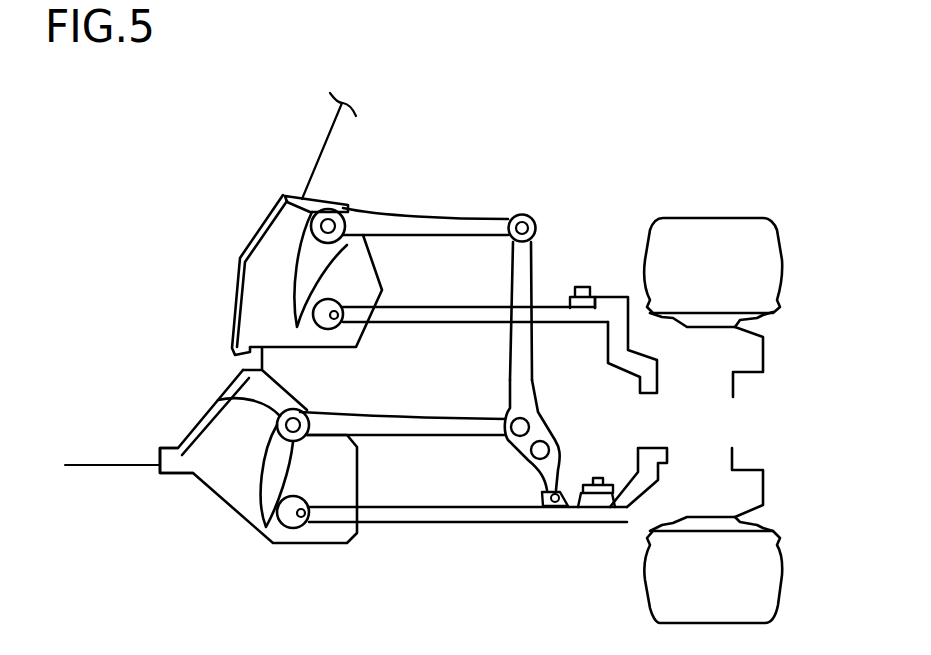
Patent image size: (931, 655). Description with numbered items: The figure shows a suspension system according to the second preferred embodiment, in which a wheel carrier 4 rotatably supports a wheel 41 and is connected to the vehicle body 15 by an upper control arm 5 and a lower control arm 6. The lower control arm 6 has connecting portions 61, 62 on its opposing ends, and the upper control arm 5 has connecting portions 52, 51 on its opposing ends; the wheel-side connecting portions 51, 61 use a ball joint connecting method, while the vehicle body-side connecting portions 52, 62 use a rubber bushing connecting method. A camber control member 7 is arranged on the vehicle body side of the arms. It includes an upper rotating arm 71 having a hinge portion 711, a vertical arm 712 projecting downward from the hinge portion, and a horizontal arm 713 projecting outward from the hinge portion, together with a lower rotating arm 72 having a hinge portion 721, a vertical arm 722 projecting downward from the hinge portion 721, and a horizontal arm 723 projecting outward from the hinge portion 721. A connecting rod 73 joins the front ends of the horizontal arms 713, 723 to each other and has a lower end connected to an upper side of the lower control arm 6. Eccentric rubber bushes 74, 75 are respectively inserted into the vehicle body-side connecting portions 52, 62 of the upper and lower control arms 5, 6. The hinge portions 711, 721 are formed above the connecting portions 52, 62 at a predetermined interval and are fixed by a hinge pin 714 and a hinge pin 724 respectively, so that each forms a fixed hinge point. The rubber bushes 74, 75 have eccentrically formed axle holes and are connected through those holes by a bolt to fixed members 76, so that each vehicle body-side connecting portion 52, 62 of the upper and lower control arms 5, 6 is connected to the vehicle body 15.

The wheel carrier 4 is at (614, 296).
The upper control arm 5 is at (458, 298).
The lower control arm 6 is at (443, 533).
The camber control member 7 is at (575, 432).
The vehicle body 15 is at (323, 148).
The wheel 41 is at (768, 263).
The connecting portion 51 is at (548, 306).
The connecting portion 52 is at (345, 326).
The connecting portion 61 is at (595, 509).
The connecting portion 62 is at (299, 522).
The upper rotating arm 71 is at (425, 208).
The lower rotating arm 72 is at (400, 446).
The connecting rod 73 is at (525, 370).
The eccentric rubber bush 74 is at (341, 304).
The eccentric rubber bush 75 is at (290, 518).
The fixed member 76 is at (203, 457).
The hinge portion 711 is at (290, 199).
The vertical arm 712 is at (298, 284).
The horizontal arm 713 is at (489, 226).
The hinge pin 714 is at (333, 209).
The hinge portion 721 is at (242, 394).
The vertical arm 722 is at (258, 480).
The horizontal arm 723 is at (462, 416).
The hinge pin 724 is at (323, 392).